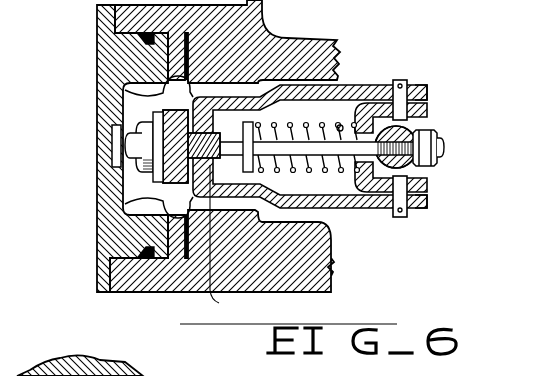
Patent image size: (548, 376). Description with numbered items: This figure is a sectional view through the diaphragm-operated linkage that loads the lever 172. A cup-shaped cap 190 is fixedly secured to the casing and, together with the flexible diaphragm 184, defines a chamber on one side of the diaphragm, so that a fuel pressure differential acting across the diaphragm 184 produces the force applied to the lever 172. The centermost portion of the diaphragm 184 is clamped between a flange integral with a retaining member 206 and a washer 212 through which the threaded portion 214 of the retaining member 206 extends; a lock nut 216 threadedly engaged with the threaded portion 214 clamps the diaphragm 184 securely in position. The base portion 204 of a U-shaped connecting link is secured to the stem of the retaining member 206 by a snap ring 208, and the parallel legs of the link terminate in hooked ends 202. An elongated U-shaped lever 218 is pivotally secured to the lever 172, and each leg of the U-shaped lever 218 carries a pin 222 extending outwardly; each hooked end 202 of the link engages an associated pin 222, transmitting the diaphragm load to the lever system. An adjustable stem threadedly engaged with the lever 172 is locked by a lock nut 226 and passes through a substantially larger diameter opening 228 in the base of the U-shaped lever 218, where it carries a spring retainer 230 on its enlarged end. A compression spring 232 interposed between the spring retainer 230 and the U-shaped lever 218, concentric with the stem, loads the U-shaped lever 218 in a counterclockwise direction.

The lever 172 is at (407, 128).
The flexible diaphragm 184 is at (132, 93).
The cup-shaped cap 190 is at (108, 53).
The hooked ends 202 is at (424, 96).
The base portion 204 is at (230, 242).
The retaining member 206 is at (240, 127).
The snap ring 208 is at (258, 81).
The washer 212 is at (150, 215).
The threaded portion 214 is at (135, 172).
The lock nut 216 is at (150, 112).
The U-shaped lever 218 is at (378, 112).
The pin 222 is at (400, 80).
The lock nut 226 is at (420, 136).
The opening 228 is at (383, 168).
The spring retainer 230 is at (248, 172).
The compression spring 232 is at (341, 126).